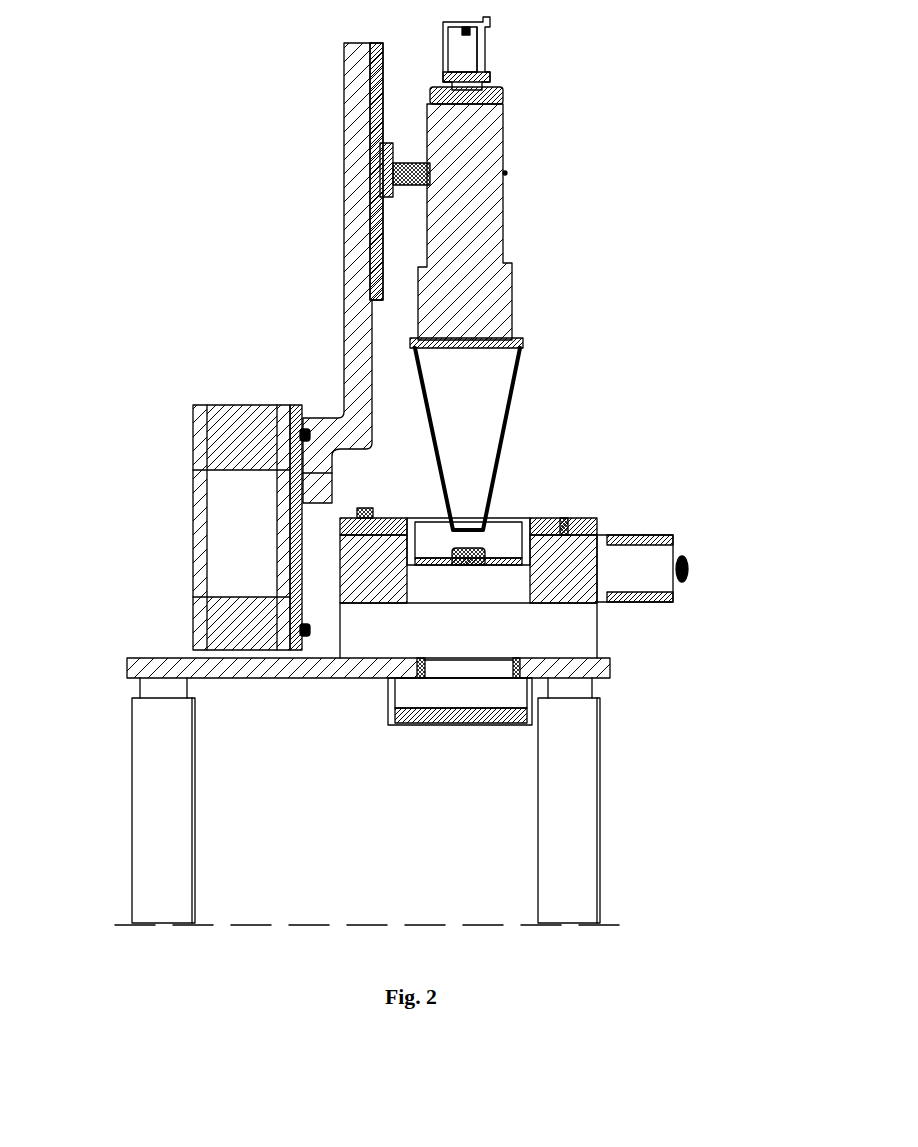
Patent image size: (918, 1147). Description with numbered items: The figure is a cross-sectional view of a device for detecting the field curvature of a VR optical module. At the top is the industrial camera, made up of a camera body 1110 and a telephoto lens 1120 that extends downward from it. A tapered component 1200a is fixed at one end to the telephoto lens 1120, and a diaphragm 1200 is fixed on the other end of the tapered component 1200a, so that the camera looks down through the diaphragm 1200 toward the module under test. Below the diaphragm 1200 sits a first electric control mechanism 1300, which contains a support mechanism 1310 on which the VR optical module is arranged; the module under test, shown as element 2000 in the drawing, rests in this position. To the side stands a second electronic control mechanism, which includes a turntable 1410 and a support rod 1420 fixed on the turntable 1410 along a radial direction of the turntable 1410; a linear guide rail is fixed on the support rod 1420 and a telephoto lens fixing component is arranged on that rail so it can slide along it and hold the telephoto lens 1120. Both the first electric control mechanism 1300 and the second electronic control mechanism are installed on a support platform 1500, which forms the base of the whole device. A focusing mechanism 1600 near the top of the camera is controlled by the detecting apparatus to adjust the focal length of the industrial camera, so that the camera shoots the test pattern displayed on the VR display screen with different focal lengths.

The camera body 1110 is at (465, 57).
The telephoto lens 1120 is at (467, 263).
The diaphragm 1200 is at (540, 520).
The tapered component 1200a is at (473, 465).
The first electric control mechanism 1300 is at (362, 548).
The support mechanism 1310 is at (370, 514).
The turntable 1410 is at (265, 437).
The support rod 1420 is at (372, 185).
The support platform 1500 is at (247, 668).
The focusing mechanism 1600 is at (430, 90).
The sample 2000 is at (480, 560).